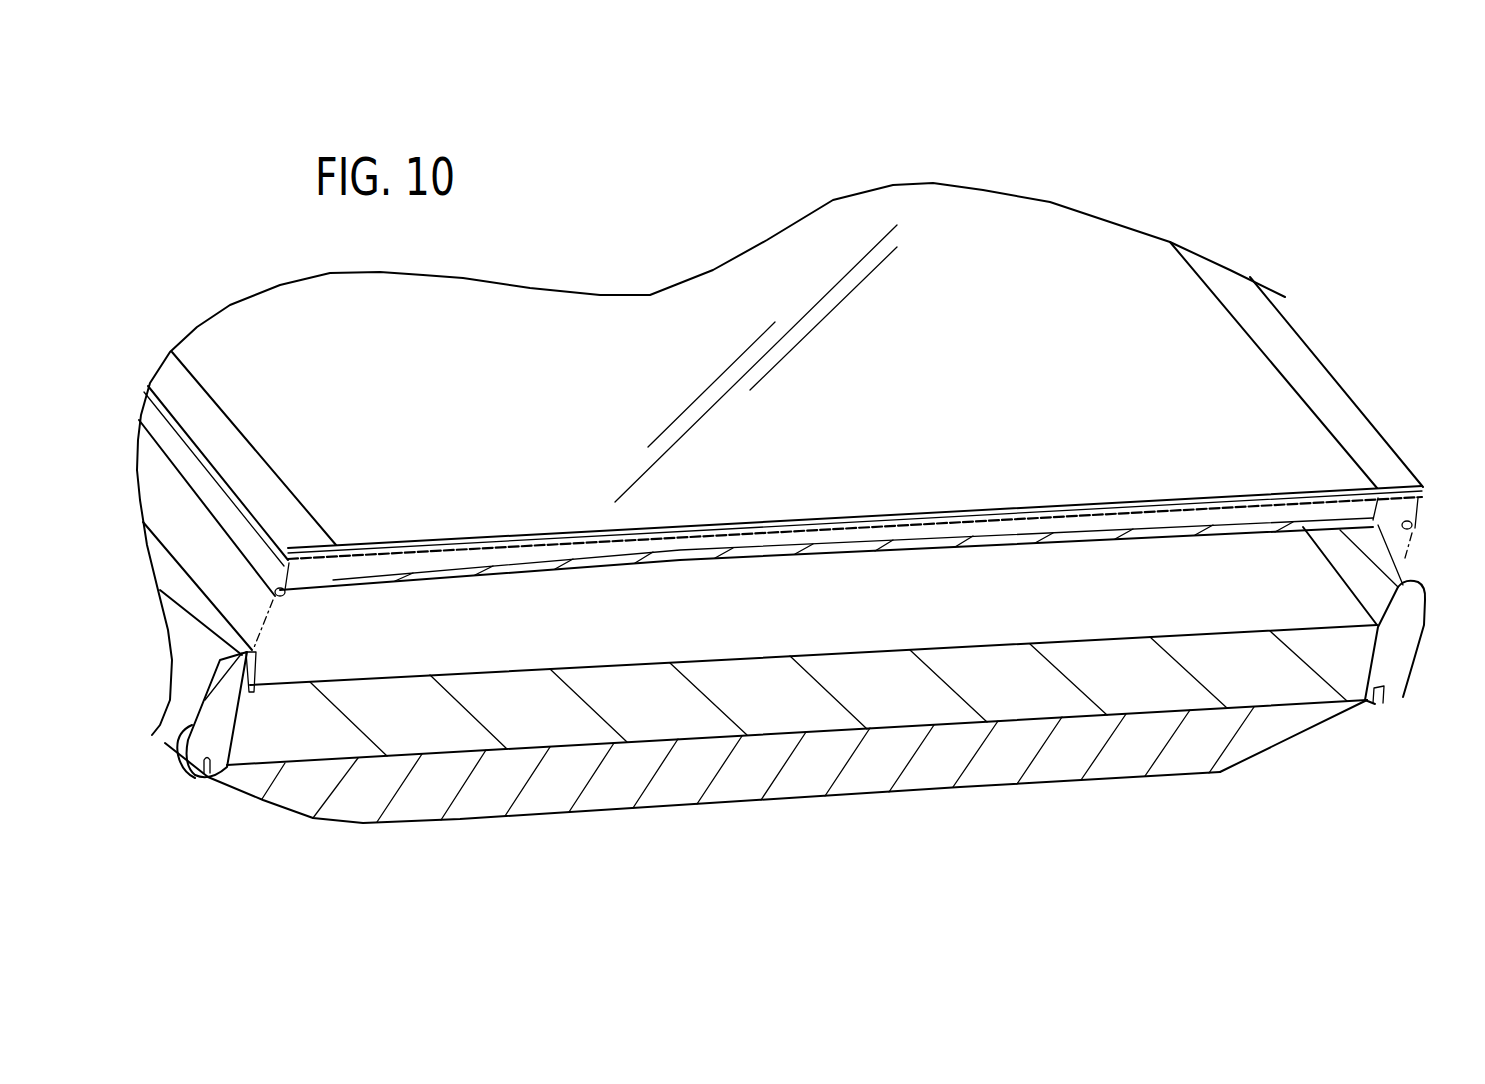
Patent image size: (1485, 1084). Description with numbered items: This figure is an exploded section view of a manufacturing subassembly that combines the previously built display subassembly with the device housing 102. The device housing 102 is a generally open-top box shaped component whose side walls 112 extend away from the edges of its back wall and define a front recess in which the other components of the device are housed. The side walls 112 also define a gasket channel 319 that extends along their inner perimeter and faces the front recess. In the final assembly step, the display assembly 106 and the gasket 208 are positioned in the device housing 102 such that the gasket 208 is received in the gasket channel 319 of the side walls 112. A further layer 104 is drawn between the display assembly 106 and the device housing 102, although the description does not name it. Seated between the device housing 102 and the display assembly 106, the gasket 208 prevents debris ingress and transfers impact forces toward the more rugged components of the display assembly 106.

The device housing 102 is at (787, 802).
The middle layer 104 is at (893, 728).
The display assembly 106 is at (712, 282).
The side walls 112 is at (173, 755).
The gasket 208 is at (247, 507).
The gasket channel 319 is at (264, 667).